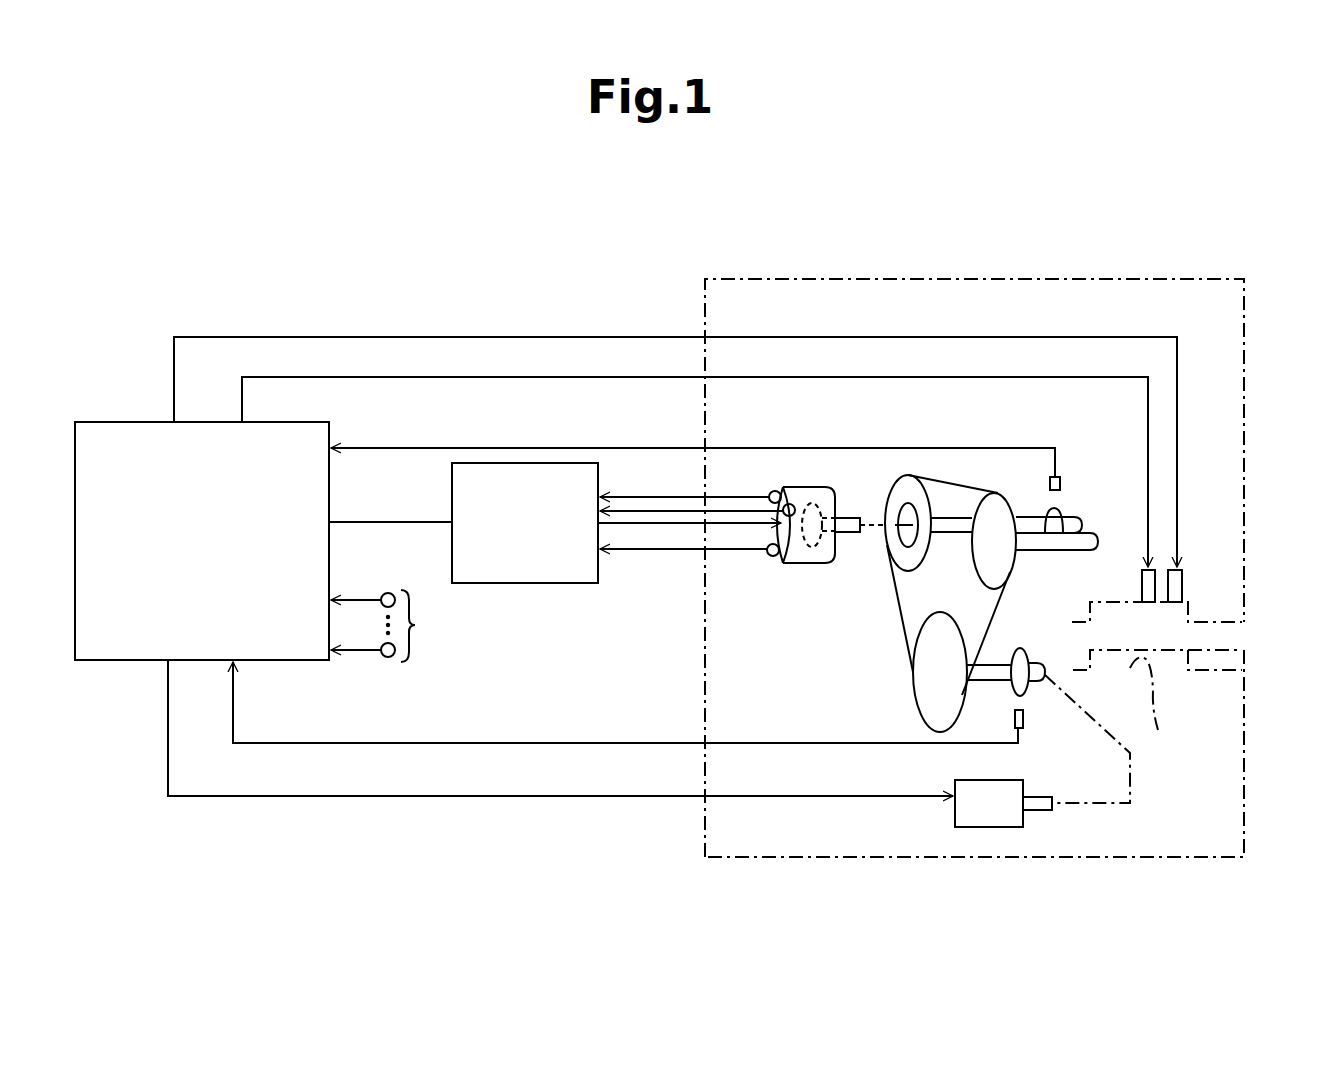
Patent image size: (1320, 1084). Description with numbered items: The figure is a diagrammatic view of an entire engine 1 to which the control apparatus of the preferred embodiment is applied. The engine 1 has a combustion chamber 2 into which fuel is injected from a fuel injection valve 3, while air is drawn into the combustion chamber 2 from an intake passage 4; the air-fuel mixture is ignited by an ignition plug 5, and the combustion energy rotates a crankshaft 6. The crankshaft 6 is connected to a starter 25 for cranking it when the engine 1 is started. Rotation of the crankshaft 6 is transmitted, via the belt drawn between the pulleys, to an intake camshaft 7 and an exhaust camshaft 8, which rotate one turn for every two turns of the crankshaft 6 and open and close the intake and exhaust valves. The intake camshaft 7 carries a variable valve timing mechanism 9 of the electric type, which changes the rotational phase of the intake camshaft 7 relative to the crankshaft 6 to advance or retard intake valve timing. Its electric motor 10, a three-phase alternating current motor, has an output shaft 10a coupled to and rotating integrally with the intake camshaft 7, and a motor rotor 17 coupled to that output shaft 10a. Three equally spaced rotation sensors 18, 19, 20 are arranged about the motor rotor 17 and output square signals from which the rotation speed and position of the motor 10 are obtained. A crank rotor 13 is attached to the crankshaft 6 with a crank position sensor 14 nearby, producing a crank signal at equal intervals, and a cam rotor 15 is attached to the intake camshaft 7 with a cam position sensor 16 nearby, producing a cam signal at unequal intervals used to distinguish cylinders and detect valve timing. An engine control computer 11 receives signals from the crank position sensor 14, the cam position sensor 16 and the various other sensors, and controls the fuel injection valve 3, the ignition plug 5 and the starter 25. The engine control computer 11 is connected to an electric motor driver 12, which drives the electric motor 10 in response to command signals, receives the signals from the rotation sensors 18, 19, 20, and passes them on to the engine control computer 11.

The engine 1 is at (1160, 279).
The combustion chamber 2 is at (1157, 681).
The fuel injection valve 3 is at (1183, 582).
The intake passage 4 is at (1230, 650).
The ignition plug 5 is at (1141, 582).
The crankshaft 6 is at (985, 682).
The intake camshaft 7 is at (949, 533).
The exhaust camshaft 8 is at (1042, 550).
The variable valve timing mechanism 9 is at (893, 545).
The electric motor 10 is at (840, 500).
The output shaft 10a is at (847, 533).
The engine control computer 11 is at (120, 420).
The electric motor driver 12 is at (541, 584).
The crank rotor 13 is at (1021, 651).
The crank position sensor 14 is at (1025, 730).
The cam rotor 15 is at (1066, 510).
The cam position sensor 16 is at (1062, 482).
The motor rotor 17 is at (819, 501).
The first rotation sensor 18 is at (792, 492).
The second rotation sensor 19 is at (771, 557).
The third rotation sensor 20 is at (771, 492).
The starter 25 is at (960, 828).